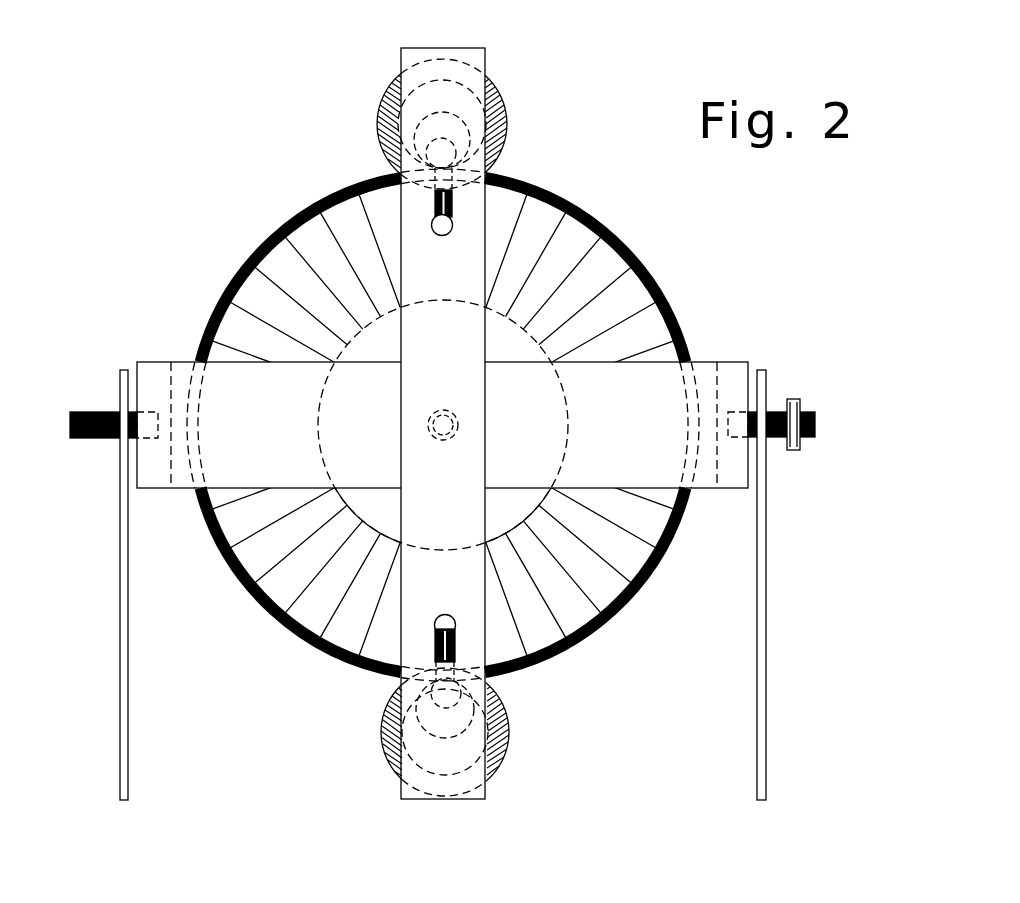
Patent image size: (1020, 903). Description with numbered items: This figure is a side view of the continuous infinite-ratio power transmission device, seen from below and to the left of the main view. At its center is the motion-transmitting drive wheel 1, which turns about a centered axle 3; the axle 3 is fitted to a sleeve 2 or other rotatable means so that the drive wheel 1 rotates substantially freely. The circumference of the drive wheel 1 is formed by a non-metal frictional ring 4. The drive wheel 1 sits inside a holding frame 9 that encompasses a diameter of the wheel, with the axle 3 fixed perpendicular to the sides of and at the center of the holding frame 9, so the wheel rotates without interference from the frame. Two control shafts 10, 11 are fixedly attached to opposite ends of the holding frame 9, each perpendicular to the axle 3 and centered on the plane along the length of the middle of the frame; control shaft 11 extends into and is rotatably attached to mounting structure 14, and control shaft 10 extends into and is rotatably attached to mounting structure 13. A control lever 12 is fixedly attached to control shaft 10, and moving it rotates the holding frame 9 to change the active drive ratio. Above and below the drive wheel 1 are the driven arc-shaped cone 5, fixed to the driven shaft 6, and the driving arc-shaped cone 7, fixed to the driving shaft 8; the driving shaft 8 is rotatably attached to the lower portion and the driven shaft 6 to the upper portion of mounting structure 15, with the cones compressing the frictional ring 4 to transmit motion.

The drive wheel 1 is at (333, 258).
The sleeve 2 is at (438, 412).
The axle 3 is at (445, 422).
The frictional ring 4 is at (538, 183).
The driven arc-shaped cone 5 is at (500, 100).
The driven shaft 6 is at (503, 170).
The driving arc-shaped cone 7 is at (505, 730).
The driving shaft 8 is at (455, 645).
The holding frame 9 is at (729, 380).
The control shaft 10 is at (781, 410).
The control shaft 11 is at (88, 412).
The control lever 12 is at (798, 397).
The mounting structure 13 is at (760, 370).
The mounting structure 14 is at (125, 368).
The mounting structure 15 is at (400, 49).